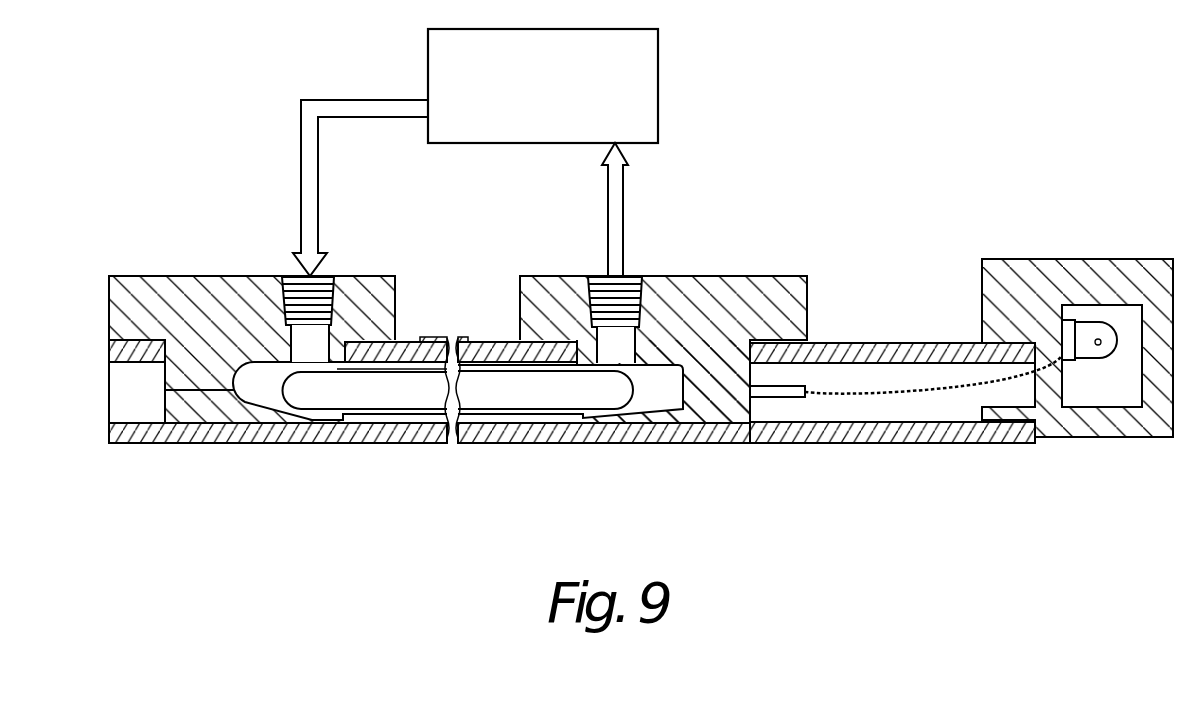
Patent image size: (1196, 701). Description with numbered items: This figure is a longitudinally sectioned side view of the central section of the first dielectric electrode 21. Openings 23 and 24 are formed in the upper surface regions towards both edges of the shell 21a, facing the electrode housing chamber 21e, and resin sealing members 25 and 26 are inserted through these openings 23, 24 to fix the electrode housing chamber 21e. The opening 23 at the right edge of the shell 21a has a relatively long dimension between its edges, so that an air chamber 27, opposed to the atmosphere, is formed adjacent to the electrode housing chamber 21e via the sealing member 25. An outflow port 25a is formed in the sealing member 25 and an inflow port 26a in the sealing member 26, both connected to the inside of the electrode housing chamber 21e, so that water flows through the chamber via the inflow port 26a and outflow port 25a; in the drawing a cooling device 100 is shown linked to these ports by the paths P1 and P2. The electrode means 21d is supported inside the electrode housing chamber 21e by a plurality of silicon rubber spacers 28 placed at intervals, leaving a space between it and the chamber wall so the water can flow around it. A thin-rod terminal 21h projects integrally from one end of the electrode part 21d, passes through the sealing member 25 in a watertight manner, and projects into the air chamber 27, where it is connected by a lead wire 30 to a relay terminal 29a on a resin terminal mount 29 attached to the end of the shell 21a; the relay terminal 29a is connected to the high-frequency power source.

The cooling device 100 is at (663, 62).
The coolant supply path P1 is at (318, 197).
The coolant return path P2 is at (624, 197).
The first dielectric electrode 21 is at (476, 460).
The shell 21a is at (583, 442).
The electrode means 21d is at (482, 392).
The electrode housing chamber 21e is at (273, 395).
The terminal 21h is at (784, 397).
The opening 23 is at (740, 362).
The opening 24 is at (177, 338).
The sealing member 25 is at (660, 277).
The outflow port 25a is at (598, 277).
The sealing member 26 is at (235, 276).
The inflow port 26a is at (327, 276).
The air chamber 27 is at (888, 405).
The silicon rubber spacers 28 is at (383, 422).
The terminal mount 29 is at (1058, 258).
The relay terminal 29a is at (1099, 360).
The lead wire 30 is at (937, 395).